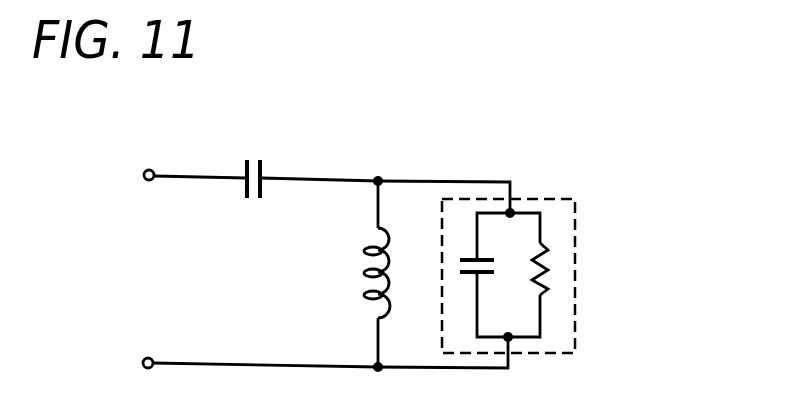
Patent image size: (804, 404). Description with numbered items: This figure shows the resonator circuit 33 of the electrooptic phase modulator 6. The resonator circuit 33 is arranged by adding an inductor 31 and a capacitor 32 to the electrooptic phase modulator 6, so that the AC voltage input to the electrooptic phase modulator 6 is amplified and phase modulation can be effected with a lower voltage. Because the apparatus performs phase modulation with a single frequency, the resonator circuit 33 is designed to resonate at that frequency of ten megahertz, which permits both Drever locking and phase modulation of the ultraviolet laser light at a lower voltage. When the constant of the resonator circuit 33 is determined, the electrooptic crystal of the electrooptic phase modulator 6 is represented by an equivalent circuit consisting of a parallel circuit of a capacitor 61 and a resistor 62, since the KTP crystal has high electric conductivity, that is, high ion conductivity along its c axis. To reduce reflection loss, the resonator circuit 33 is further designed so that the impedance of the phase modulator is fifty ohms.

The electrooptic phase modulator 6 is at (577, 222).
The inductor 31 is at (366, 275).
The capacitor 32 is at (257, 159).
The resonator circuit 33 is at (465, 177).
The capacitor 61 is at (494, 267).
The resistor 62 is at (545, 286).